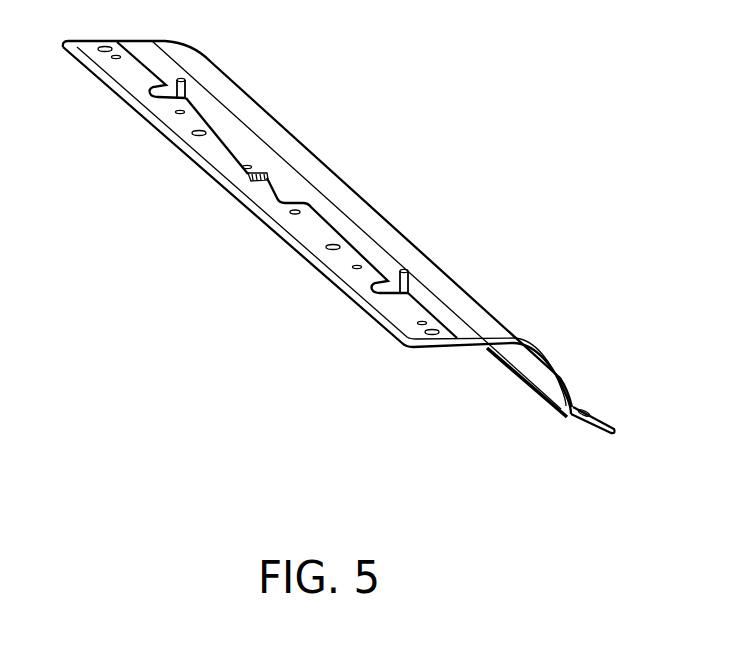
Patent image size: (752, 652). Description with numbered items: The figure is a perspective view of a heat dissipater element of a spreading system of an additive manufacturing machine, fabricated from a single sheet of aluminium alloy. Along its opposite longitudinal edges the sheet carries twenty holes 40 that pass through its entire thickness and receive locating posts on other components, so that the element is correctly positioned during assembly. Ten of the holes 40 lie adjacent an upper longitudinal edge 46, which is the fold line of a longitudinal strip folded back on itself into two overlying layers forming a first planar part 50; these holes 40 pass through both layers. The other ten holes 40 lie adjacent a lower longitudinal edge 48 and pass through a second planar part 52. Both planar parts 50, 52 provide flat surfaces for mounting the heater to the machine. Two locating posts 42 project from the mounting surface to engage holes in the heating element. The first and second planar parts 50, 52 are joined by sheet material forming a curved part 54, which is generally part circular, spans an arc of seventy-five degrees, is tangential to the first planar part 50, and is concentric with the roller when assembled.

The holes 40 is at (244, 167).
The locating posts 42 is at (185, 81).
The upper longitudinal edge 46 is at (243, 205).
The lower longitudinal edge 48 is at (577, 412).
The first planar part 50 is at (472, 333).
The second planar part 52 is at (596, 428).
The curved part 54 is at (273, 117).